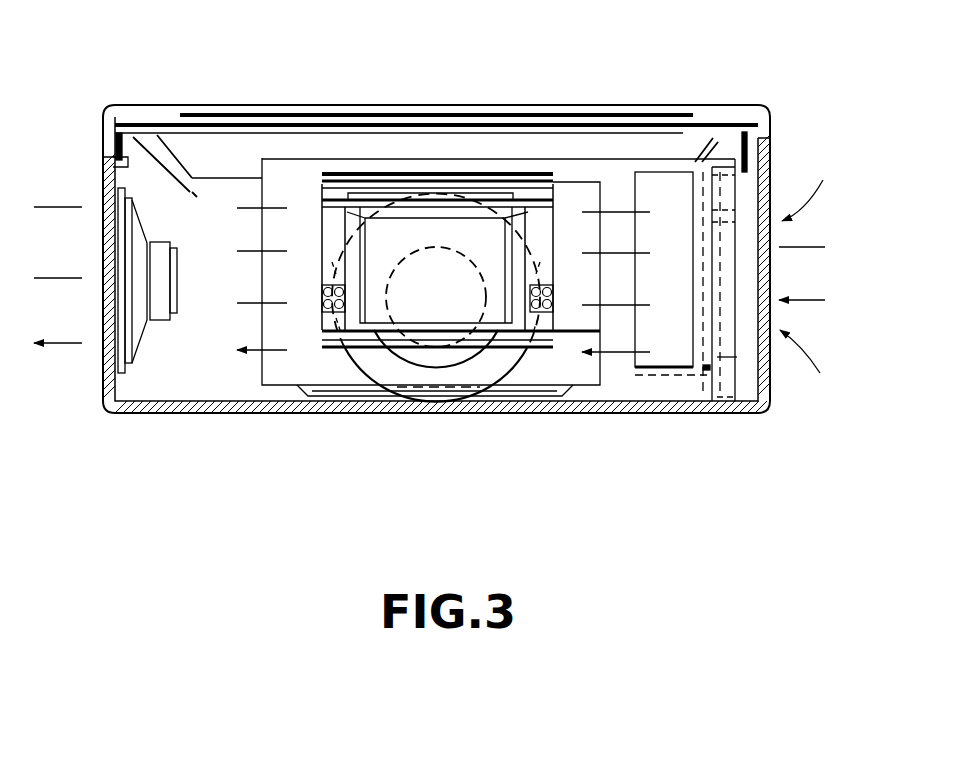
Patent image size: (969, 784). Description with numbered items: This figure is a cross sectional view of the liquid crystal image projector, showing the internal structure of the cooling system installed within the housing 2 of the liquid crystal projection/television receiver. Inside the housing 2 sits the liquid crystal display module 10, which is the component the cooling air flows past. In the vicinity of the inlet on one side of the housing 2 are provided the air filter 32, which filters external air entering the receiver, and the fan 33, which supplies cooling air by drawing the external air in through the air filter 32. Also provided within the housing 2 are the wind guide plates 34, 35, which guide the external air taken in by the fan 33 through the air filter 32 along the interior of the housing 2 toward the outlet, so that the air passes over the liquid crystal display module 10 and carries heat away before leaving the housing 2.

The housing 2 is at (699, 101).
The liquid crystal display module 10 is at (470, 218).
The air filter 32 is at (770, 281).
The fan 33 is at (672, 353).
The wind guide plate 34 is at (344, 157).
The wind guide plate 35 is at (360, 396).